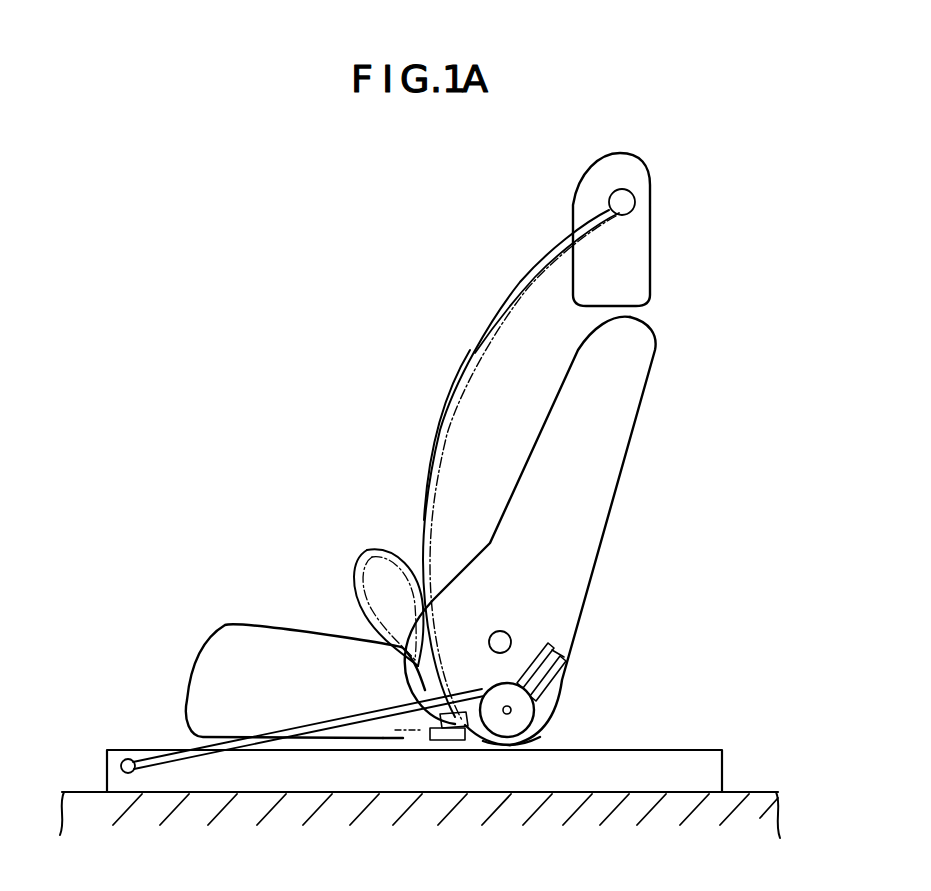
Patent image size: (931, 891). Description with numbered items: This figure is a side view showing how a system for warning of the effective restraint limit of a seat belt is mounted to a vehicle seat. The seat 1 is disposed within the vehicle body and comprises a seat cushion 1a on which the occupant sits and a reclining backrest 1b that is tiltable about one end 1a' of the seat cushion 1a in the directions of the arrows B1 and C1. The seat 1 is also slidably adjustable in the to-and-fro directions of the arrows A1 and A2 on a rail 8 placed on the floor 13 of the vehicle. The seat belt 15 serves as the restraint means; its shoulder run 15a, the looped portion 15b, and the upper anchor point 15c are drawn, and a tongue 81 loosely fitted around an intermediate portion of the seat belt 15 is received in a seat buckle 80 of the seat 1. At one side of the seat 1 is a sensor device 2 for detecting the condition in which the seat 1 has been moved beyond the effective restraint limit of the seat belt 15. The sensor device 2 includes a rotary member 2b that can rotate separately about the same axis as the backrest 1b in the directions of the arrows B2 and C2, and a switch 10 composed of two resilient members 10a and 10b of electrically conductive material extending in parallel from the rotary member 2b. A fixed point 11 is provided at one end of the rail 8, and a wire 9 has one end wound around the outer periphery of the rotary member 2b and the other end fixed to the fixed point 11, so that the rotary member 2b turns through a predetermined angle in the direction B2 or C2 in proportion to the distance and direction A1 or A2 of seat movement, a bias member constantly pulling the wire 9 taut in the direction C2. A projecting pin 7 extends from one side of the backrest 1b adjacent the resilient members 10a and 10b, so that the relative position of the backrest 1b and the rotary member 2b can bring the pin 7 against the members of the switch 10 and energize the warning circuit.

The seat 1 is at (602, 630).
The seat cushion 1a is at (292, 657).
The one end of the seat cushion 1a' is at (514, 798).
The reclining backrest 1b is at (632, 425).
The sensor device 2 is at (348, 690).
The rotary member 2b is at (540, 737).
The projecting pin 7 is at (501, 631).
The rail 8 is at (723, 768).
The wire 9 is at (305, 726).
The switch 10 is at (563, 688).
The resilient member 10a is at (549, 643).
The resilient member 10b is at (566, 653).
The fixed point 11 is at (128, 758).
The floor 13 is at (195, 808).
The seat belt 15 is at (456, 360).
The shoulder belt 15a is at (484, 347).
The lap belt loop 15b is at (367, 548).
The shoulder anchor 15c is at (636, 200).
The seat buckle 80 is at (428, 742).
The tongue 81 is at (400, 730).
The direction of seat sliding movement A1 is at (270, 857).
The direction of seat sliding movement A2 is at (267, 871).
The direction of backrest tilting B1 is at (535, 522).
The direction of rotary member rotation B2 is at (520, 665).
The direction of backrest tilting C1 is at (598, 525).
The direction of rotary member rotation C2 is at (560, 678).